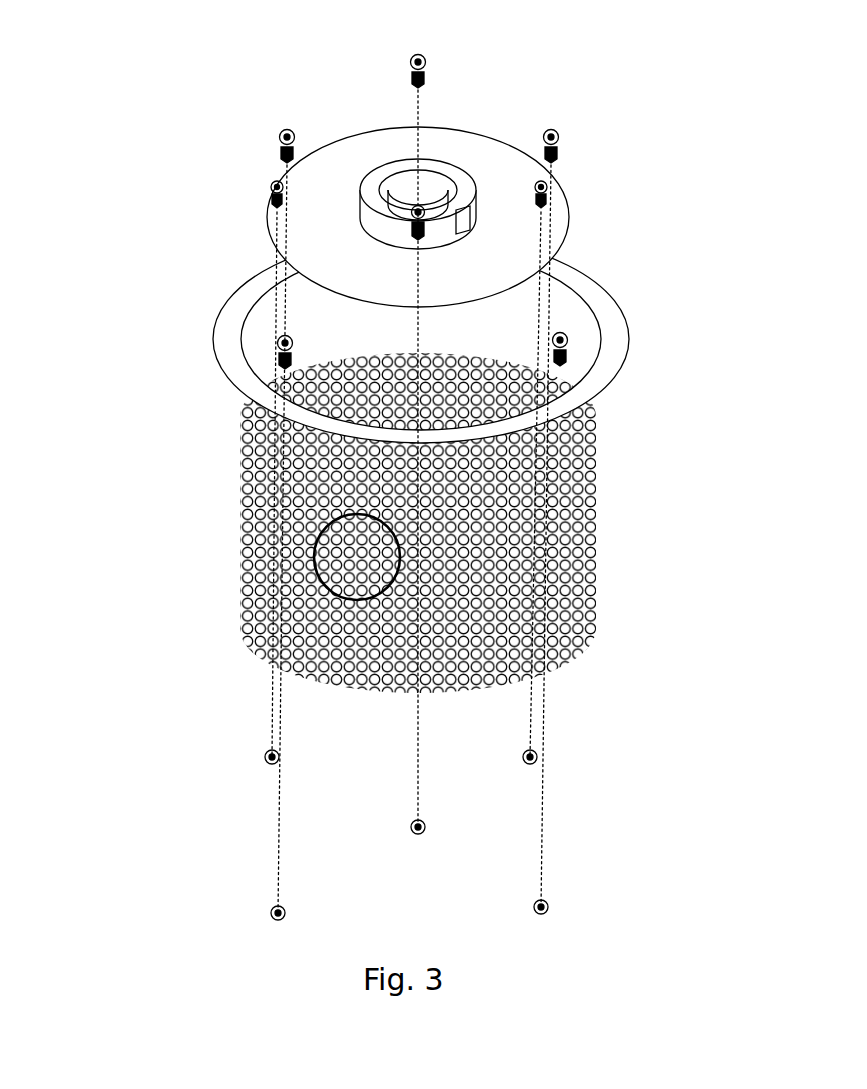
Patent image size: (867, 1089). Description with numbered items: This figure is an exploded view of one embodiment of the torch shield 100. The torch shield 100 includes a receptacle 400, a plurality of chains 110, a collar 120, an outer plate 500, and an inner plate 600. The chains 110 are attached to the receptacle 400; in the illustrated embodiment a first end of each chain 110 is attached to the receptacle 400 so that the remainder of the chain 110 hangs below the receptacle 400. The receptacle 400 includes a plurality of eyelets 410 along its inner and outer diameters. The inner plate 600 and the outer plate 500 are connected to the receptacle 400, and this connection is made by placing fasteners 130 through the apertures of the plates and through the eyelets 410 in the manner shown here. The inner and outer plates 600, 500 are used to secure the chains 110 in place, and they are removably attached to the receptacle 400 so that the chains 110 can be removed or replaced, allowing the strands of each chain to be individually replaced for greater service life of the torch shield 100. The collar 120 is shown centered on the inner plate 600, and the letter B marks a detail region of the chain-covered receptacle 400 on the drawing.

The torch shield 100 is at (633, 189).
The chains 110 is at (422, 523).
The collar 120 is at (433, 170).
The fasteners 130 is at (428, 61).
The receptacle 400 is at (597, 455).
The eyelets 410 is at (597, 538).
The outer plate 500 is at (605, 310).
The inner plate 600 is at (313, 227).
The detail region B is at (240, 505).